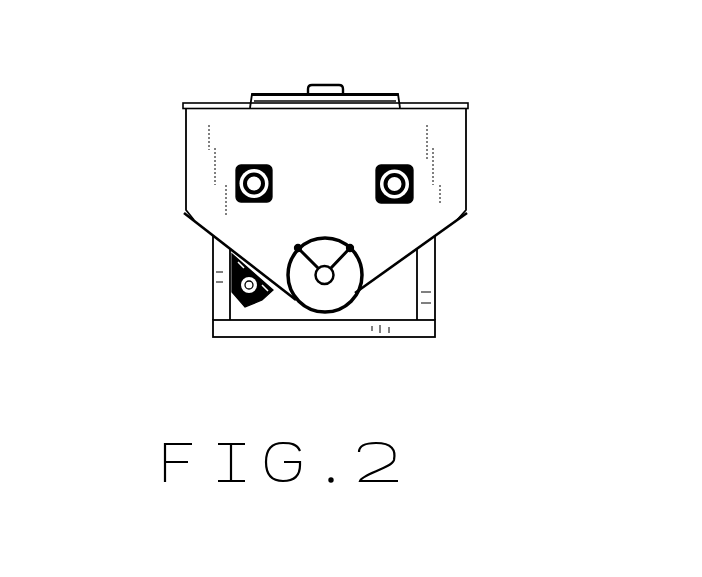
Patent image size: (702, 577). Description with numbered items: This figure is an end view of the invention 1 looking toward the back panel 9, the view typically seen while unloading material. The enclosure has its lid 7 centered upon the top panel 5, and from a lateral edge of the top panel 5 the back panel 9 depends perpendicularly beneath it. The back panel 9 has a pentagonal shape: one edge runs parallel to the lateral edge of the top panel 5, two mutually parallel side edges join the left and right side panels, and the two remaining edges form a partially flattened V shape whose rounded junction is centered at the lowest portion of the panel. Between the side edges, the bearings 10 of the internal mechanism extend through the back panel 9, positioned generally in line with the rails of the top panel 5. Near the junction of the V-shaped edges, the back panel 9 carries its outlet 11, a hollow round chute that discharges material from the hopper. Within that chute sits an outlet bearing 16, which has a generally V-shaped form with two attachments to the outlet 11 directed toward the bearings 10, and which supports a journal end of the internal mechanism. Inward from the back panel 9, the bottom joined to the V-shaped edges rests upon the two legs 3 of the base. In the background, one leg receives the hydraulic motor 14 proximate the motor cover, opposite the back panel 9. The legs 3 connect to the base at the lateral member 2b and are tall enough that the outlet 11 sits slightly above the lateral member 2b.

The invention 1 is at (146, 121).
The lateral member 2b is at (403, 335).
The legs 3 is at (220, 265).
The top panel 5 is at (207, 103).
The lid 7 is at (322, 84).
The back panel 9 is at (448, 133).
The bearings 10 is at (237, 182).
The outlet 11 is at (323, 284).
The hydraulic motor 14 is at (233, 297).
The outlet bearing 16 is at (307, 268).